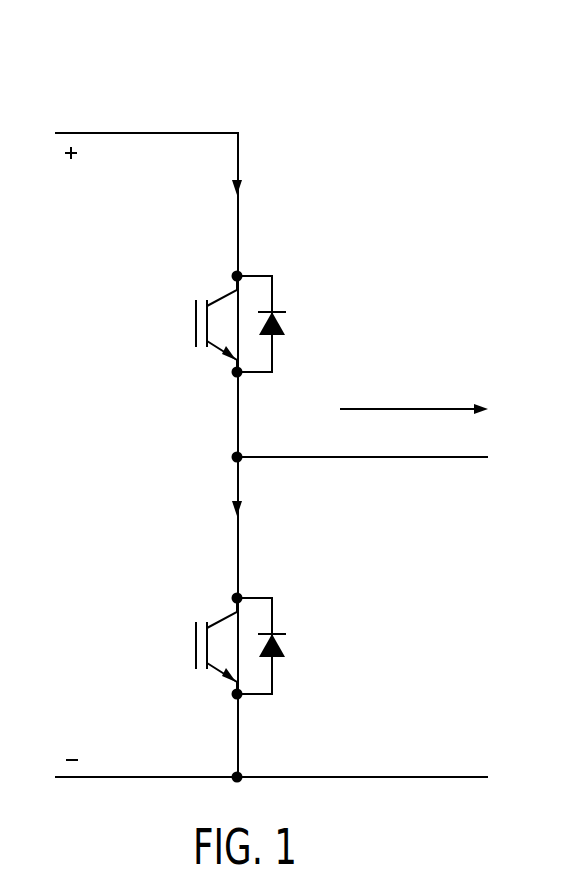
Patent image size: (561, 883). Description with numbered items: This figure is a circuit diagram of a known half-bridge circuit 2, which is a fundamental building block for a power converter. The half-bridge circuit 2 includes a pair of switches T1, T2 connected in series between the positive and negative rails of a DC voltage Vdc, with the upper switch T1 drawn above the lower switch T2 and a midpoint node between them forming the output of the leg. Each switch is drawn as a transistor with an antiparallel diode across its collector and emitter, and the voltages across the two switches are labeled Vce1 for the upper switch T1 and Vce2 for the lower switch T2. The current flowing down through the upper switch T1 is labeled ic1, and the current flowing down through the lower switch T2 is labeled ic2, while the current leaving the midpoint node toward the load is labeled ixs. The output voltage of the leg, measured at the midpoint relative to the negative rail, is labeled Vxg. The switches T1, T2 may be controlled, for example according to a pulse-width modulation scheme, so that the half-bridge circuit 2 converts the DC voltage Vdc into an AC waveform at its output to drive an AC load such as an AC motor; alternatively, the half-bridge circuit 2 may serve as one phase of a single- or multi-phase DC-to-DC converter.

The half-bridge circuit 2 is at (417, 86).
The switch T1 is at (196, 323).
The switch T2 is at (196, 645).
The collector-emitter voltage of T1 / freewheeling diode Vce1 is at (285, 324).
The collector-emitter voltage of T2 / freewheeling diode Vce2 is at (285, 646).
The DC voltage Vdc is at (50, 462).
The output voltage Vxg is at (474, 701).
The collector current of T1 ic1 is at (252, 191).
The collector current of T2 ic2 is at (252, 512).
The output current ixs is at (414, 387).